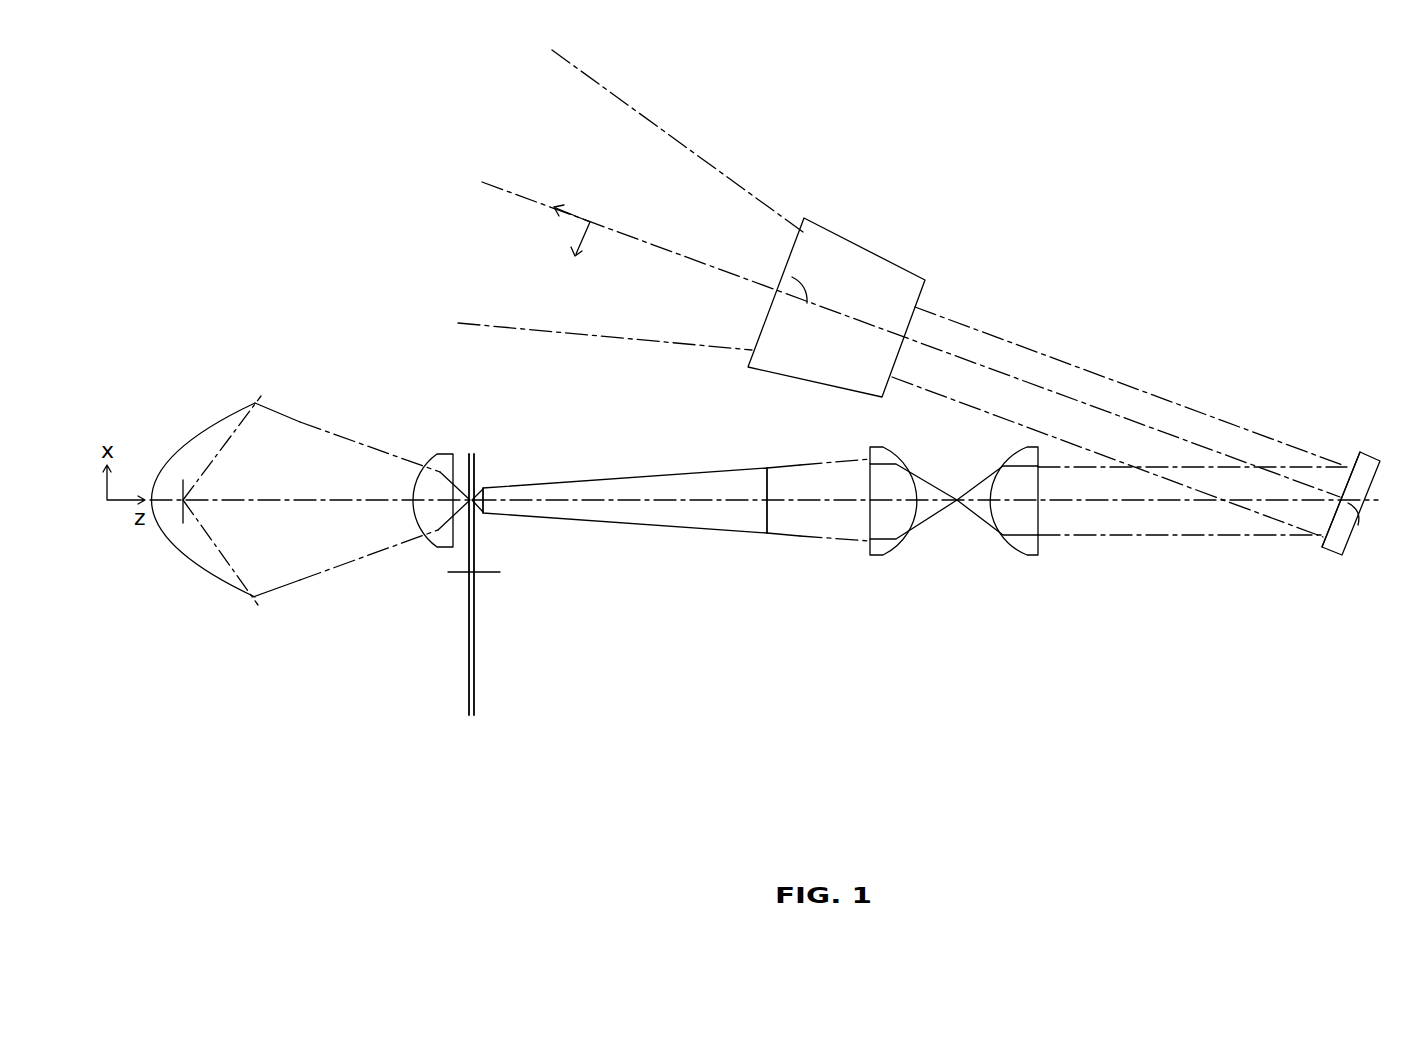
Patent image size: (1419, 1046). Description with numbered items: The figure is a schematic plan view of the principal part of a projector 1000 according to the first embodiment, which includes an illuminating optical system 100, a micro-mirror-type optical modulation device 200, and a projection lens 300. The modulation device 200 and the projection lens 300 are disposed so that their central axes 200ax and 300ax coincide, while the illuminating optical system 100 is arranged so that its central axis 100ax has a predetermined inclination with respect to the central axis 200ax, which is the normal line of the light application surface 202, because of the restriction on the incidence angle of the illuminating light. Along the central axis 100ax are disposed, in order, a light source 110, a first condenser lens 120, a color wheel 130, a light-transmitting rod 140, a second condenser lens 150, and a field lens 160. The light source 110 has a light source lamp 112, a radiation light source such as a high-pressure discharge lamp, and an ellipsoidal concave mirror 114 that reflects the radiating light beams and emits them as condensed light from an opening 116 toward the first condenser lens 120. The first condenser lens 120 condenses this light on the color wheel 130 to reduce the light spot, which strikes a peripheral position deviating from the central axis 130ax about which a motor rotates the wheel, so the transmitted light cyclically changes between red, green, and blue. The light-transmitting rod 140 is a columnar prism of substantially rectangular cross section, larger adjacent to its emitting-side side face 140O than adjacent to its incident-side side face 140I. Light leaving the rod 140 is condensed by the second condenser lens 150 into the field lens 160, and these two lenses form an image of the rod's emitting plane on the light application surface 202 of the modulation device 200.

The projector 1000 is at (280, 101).
The illuminating optical system 100 is at (1055, 768).
The central axis of the illuminating optical system 100ax is at (1083, 505).
The light source 110 is at (240, 613).
The light source lamp 112 is at (183, 515).
The concave mirror 114 is at (212, 583).
The opening 116 is at (307, 436).
The first condenser lens 120 is at (437, 548).
The color wheel 130 is at (507, 609).
The central axis of the color wheel 130ax is at (476, 573).
The light-transmitting rod 140 is at (637, 528).
The incident-side side face 140I is at (481, 486).
The emitting-side side face 140O is at (768, 478).
The second condenser lens 150 is at (875, 557).
The field lens 160 is at (1030, 557).
The micro-mirror-type optical modulation device 200 is at (1327, 556).
The central axis of the micro-mirror-type optical modulation device 200ax is at (1360, 533).
The light application surface 202 is at (1345, 477).
The projection lens 300 is at (870, 248).
The central axis of the projection lens 300ax is at (777, 267).